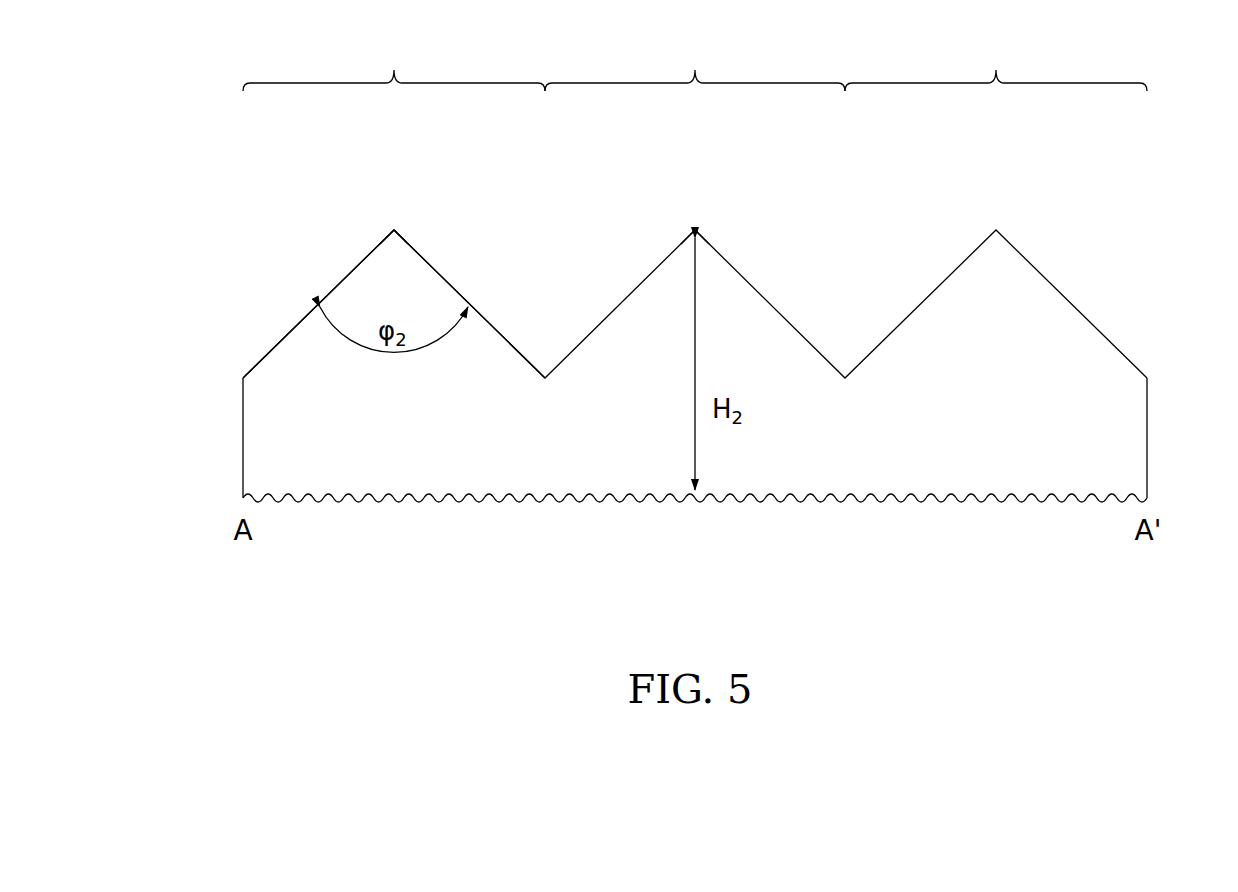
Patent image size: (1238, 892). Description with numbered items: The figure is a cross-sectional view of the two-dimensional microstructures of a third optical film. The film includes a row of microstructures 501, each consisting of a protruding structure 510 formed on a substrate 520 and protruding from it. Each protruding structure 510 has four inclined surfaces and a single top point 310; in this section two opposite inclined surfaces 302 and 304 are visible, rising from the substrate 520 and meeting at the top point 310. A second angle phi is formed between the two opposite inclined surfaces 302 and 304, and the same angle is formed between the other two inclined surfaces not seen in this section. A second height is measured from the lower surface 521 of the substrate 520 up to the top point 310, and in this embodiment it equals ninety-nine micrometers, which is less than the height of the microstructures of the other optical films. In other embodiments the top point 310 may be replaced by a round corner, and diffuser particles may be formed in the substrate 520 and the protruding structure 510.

The microstructure 501 is at (695, 62).
The protruding structure 510 is at (220, 230).
The inclined surface 302 is at (283, 336).
The inclined surface 304 is at (503, 336).
The top point 310 is at (394, 229).
The substrate 520 is at (265, 455).
The lower surface 521 is at (746, 505).